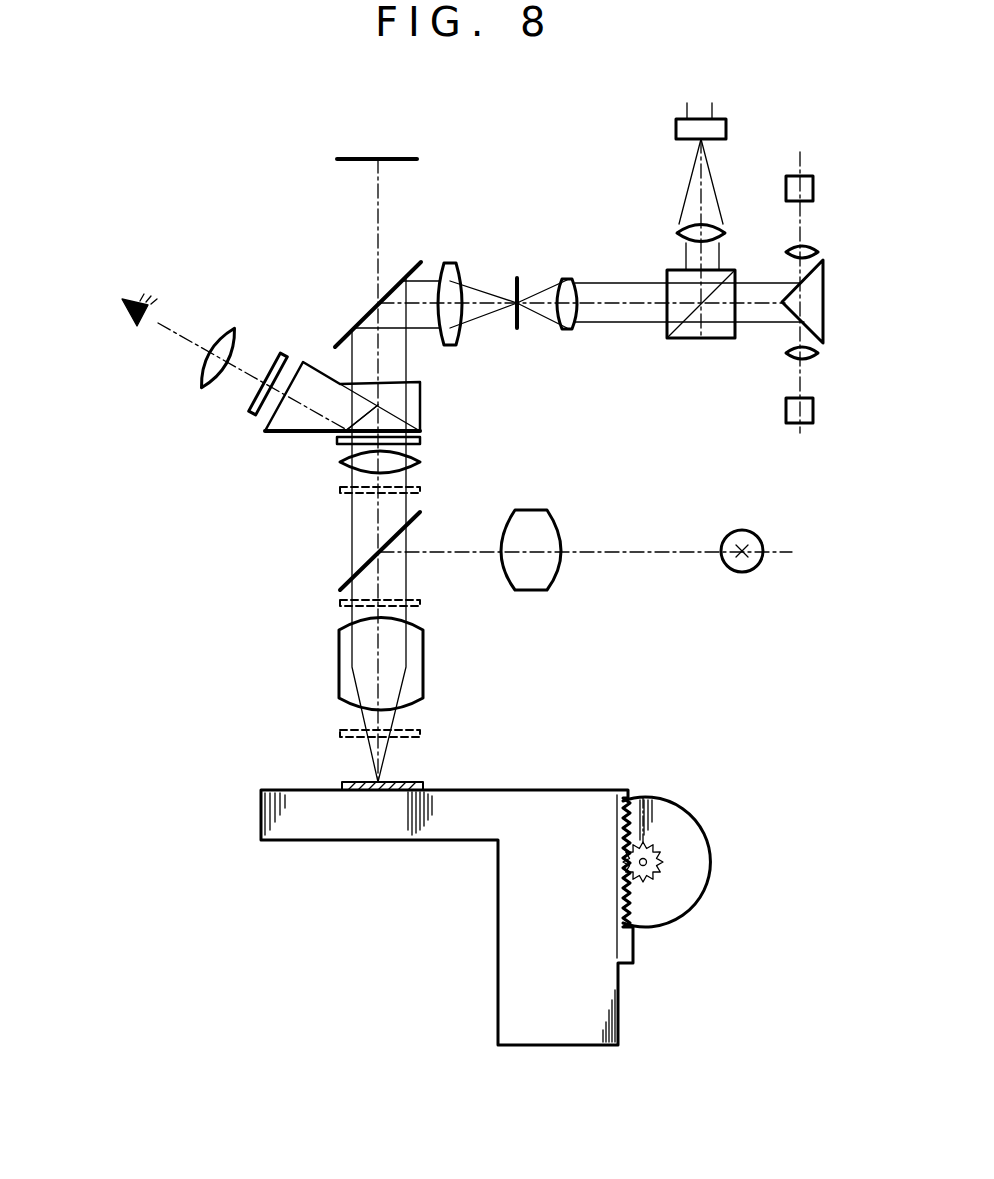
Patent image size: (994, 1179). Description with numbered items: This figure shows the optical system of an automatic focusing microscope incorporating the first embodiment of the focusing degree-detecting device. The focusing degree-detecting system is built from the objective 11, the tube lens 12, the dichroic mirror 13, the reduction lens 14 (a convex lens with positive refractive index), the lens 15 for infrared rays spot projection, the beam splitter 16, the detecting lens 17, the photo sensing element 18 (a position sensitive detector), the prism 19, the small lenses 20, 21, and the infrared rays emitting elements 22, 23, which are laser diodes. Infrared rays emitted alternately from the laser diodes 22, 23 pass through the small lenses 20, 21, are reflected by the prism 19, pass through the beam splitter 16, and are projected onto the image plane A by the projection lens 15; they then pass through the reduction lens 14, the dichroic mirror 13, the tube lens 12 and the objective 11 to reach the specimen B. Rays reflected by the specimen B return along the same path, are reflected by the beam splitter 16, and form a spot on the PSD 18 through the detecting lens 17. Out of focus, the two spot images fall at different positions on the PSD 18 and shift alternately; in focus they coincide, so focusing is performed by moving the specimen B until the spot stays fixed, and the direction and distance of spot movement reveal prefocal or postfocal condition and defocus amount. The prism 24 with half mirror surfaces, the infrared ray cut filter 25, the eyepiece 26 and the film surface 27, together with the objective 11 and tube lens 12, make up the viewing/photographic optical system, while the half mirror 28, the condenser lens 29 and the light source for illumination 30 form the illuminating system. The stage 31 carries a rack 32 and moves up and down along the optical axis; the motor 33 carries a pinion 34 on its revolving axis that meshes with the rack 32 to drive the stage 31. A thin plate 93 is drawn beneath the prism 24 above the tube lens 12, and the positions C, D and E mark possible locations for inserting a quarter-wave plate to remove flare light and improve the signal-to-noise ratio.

The objective 11 is at (423, 687).
The tube lens 12 is at (340, 463).
The dichroic mirror 13 is at (405, 264).
The reduction lens 14 is at (452, 344).
The lens for infrared rays spot projection 15 is at (568, 278).
The beam splitter 16 is at (686, 340).
The detecting lens 17 is at (680, 232).
The photo sensing element 18 is at (677, 128).
The prism 19 is at (800, 298).
The small lens 20 is at (783, 353).
The small lens 21 is at (792, 250).
The infrared rays emitting element 22 is at (786, 413).
The infrared rays emitting element 23 is at (788, 188).
The prism with half mirror surfaces 24 is at (283, 424).
The infrared ray cut filter 25 is at (278, 357).
The eyepiece 26 is at (207, 383).
The film surface 27 is at (350, 162).
The half mirror 28 is at (348, 587).
The condenser lens 29 is at (527, 510).
The light source for illumination 30 is at (746, 572).
The stage 31 is at (393, 830).
The rack 32 is at (623, 793).
The motor 33 is at (675, 820).
The pinion 34 is at (650, 877).
The plate 93 is at (422, 440).
The image plane A is at (522, 328).
The specimen B is at (355, 782).
The inserting location C is at (422, 603).
The inserting location D is at (422, 732).
The inserting location E is at (422, 490).